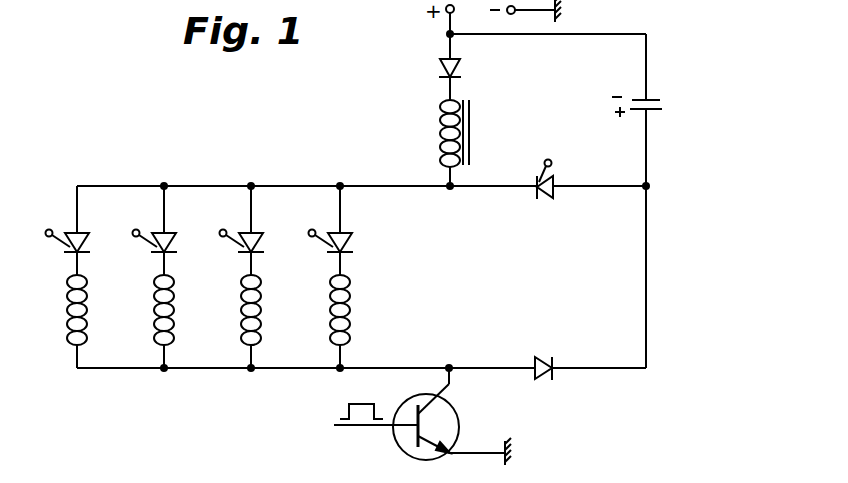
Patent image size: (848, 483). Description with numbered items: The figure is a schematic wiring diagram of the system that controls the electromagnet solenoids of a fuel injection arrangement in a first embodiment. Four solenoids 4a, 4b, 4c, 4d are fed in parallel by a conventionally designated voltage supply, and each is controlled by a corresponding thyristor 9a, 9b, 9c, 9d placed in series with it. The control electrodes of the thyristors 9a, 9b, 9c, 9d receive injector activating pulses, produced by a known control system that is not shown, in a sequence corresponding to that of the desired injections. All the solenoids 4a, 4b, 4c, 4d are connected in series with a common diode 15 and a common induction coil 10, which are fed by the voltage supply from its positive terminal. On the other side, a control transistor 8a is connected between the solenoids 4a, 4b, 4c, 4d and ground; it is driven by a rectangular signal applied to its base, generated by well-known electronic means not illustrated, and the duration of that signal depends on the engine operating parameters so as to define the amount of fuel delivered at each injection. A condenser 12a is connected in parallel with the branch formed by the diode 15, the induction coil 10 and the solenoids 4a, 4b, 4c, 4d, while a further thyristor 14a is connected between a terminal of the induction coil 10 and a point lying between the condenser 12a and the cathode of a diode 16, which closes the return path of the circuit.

The solenoid 4a is at (67, 321).
The solenoid 4b is at (155, 322).
The solenoid 4c is at (242, 321).
The solenoid 4d is at (330, 322).
The thyristor 9a is at (88, 240).
The thyristor 9b is at (175, 240).
The thyristor 9c is at (262, 240).
The thyristor 9d is at (352, 238).
The induction coil 10 is at (438, 130).
The condenser 12a is at (655, 112).
The further thyristor 14a is at (549, 199).
The common diode 15 is at (437, 65).
The diode 16 is at (545, 357).
The control transistor 8a is at (459, 428).